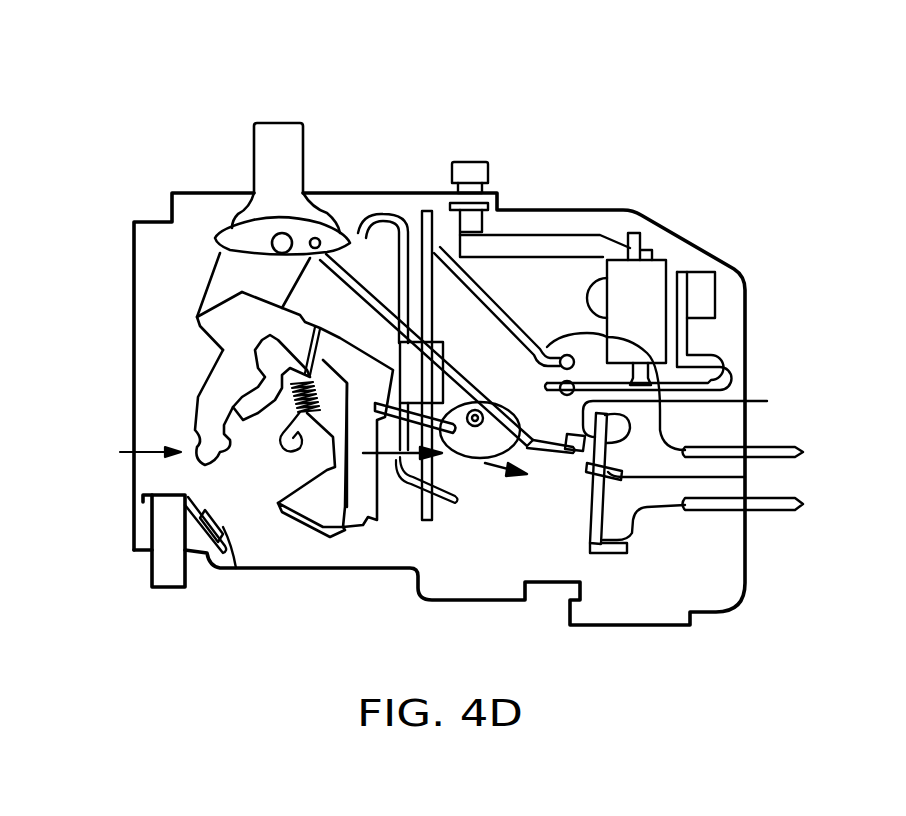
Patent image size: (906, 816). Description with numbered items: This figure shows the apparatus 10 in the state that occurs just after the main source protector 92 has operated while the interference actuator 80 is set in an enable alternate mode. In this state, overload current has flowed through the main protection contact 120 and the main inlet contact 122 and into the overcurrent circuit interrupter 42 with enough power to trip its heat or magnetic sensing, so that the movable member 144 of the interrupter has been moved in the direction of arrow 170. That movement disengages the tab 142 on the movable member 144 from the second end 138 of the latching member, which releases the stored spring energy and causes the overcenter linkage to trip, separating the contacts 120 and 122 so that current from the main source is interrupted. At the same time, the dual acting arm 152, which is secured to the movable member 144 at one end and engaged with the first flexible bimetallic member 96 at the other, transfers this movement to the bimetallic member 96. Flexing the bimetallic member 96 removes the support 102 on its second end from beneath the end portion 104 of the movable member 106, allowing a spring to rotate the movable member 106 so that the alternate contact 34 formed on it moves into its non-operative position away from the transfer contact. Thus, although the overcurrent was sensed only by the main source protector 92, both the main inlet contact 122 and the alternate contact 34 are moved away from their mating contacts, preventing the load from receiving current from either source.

The apparatus 10 is at (608, 176).
The alternate contact 34 is at (582, 448).
The overcurrent circuit interrupter 42 is at (416, 242).
The interference actuator 80 is at (490, 171).
The main source protector 92 is at (116, 455).
The first flexible bimetallic member 96 is at (592, 520).
The support 102 is at (745, 401).
The end portion 104 is at (570, 455).
The movable member 106 is at (532, 423).
The main protection contact 120 is at (300, 535).
The main inlet contact 122 is at (225, 532).
The second end 138 is at (369, 440).
The tab 142 is at (403, 462).
The movable member 144 is at (405, 434).
The dual acting arm 152 is at (745, 477).
The arrow 170 is at (363, 497).